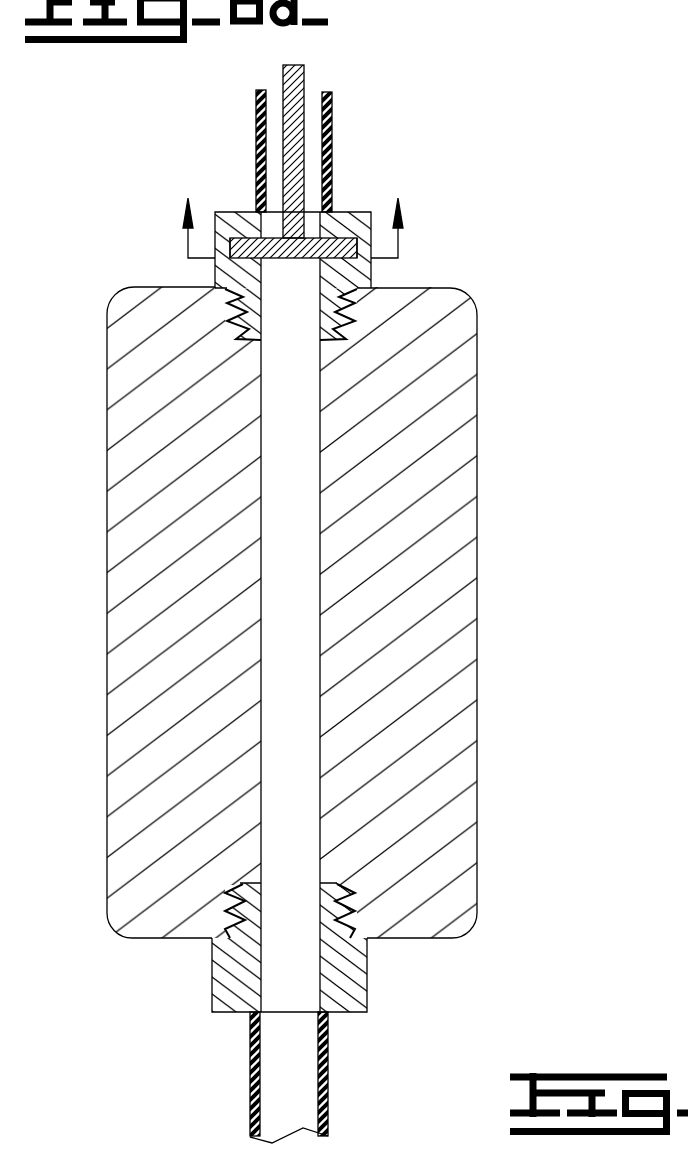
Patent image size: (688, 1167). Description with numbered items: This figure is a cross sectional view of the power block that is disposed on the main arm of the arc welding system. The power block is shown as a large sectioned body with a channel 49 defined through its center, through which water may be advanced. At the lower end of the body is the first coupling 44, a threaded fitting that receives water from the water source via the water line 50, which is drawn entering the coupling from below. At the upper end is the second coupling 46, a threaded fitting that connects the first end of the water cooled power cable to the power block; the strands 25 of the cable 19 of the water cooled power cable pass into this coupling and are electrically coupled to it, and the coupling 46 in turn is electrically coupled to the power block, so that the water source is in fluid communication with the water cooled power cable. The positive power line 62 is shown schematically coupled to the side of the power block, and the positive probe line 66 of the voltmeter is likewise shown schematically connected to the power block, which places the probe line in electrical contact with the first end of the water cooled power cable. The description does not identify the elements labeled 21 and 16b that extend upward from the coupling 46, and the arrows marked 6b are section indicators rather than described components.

The cable 19 is at (305, 78).
The left tube 21 is at (282, 90).
The right tube 16b is at (333, 117).
The strands 25 is at (245, 236).
The second coupling 46 is at (372, 277).
The positive probe line 66 is at (481, 487).
The positive power line 62 is at (481, 733).
The channel 49 is at (302, 807).
The first coupling 44 is at (368, 995).
The water line 50 is at (328, 1110).
The section line 6B 6b is at (296, 213).